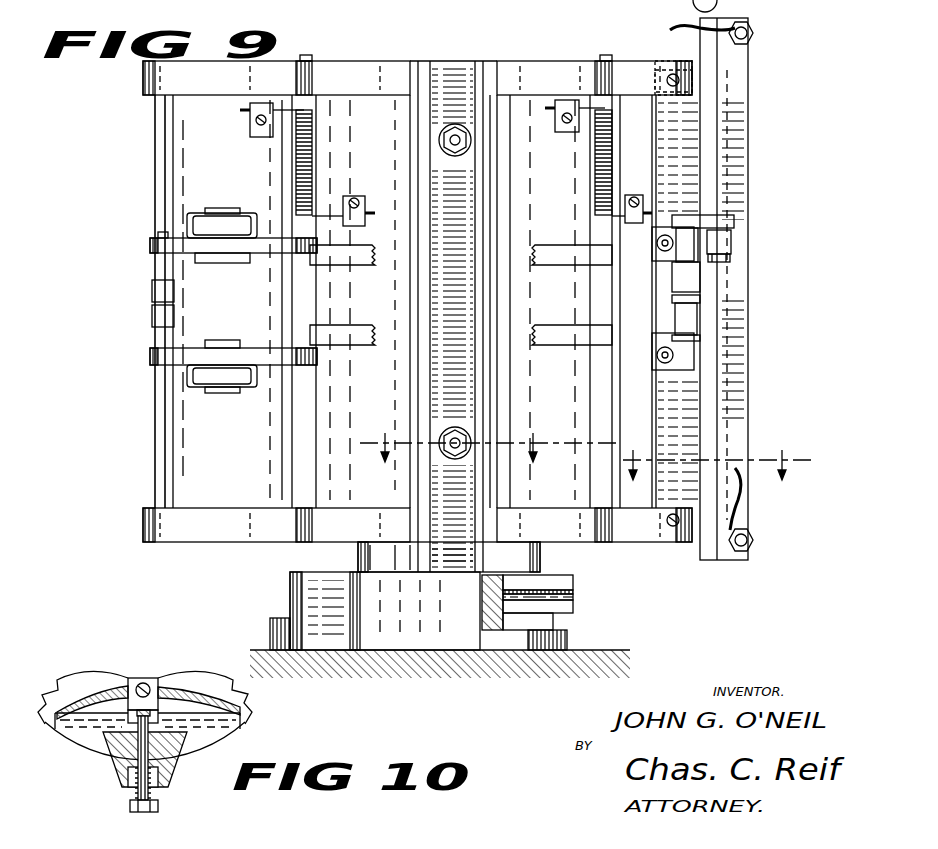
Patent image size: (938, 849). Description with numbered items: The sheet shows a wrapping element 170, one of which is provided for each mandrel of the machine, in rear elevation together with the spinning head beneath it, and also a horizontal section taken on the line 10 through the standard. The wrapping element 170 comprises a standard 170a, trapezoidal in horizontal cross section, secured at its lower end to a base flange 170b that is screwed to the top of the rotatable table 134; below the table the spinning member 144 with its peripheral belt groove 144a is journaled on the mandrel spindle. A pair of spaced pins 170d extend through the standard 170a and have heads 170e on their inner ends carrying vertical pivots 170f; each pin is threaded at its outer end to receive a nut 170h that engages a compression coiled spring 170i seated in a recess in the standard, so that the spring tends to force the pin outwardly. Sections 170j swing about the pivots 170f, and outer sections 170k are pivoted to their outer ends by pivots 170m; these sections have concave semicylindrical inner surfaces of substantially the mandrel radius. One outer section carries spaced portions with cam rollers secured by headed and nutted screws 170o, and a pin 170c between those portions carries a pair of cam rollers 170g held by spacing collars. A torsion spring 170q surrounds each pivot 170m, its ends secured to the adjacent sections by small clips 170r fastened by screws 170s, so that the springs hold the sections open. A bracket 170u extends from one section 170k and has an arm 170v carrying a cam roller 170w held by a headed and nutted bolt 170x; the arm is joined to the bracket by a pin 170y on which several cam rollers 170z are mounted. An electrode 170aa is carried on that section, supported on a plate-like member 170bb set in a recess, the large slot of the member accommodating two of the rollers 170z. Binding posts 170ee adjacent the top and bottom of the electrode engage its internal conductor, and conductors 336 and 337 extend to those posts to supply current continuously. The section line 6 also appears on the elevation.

In FIG. 9, the wrapping element 170 is at (137, 444).
In FIG. 10, the wrapping element 170 is at (258, 700).
In FIG. 9, the standard 170a is at (465, 61).
In FIG. 10, the standard 170a is at (122, 758).
In FIG. 9, the electrode 170aa is at (750, 104).
In FIG. 9, the base flange 170b is at (290, 586).
In FIG. 9, the plate-like member 170bb is at (678, 62).
In FIG. 9, the pin 170c is at (158, 235).
In FIG. 9, the pins 170d is at (455, 156).
In FIG. 10, the pins 170d is at (168, 762).
In FIG. 10, the heads 170e is at (128, 688).
In FIG. 10, the vertical pivots 170f is at (148, 686).
In FIG. 9, the cam rollers 170g is at (152, 312).
In FIG. 9, the nut 170h is at (250, 215).
In FIG. 10, the nut 170h is at (160, 807).
In FIG. 10, the compression coiled spring 170i is at (132, 797).
In FIG. 9, the sections 170j is at (280, 256).
In FIG. 10, the sections 170j is at (91, 712).
In FIG. 9, the outer sections 170k is at (176, 254).
In FIG. 9, the pivots 170m is at (306, 55).
In FIG. 9, the headed and nutted screws 170o is at (218, 213).
In FIG. 9, the torsion spring 170q is at (312, 160).
In FIG. 9, the clips 170r is at (250, 122).
In FIG. 9, the screws 170s is at (353, 198).
In FIG. 9, the bracket 170u is at (655, 243).
In FIG. 9, the arm 170v is at (735, 218).
In FIG. 9, the cam roller 170w is at (731, 240).
In FIG. 9, the headed and nutted bolt 170x is at (731, 259).
In FIG. 9, the pin 170y is at (682, 228).
In FIG. 9, the cam rollers 170z is at (675, 312).
In FIG. 9, the binding posts 170ee is at (755, 33).
In FIG. 9, the conductor 336 is at (672, 30).
In FIG. 9, the conductor 337 is at (742, 495).
In FIG. 9, the spinning member 144 is at (560, 576).
In FIG. 9, the belt groove 144a is at (577, 604).
In FIG. 9, the rotatable table 134 is at (598, 650).
In FIG. 9, the section line 10— 10 is at (484, 431).
In FIG. 9, the section line 6- 6 is at (718, 449).